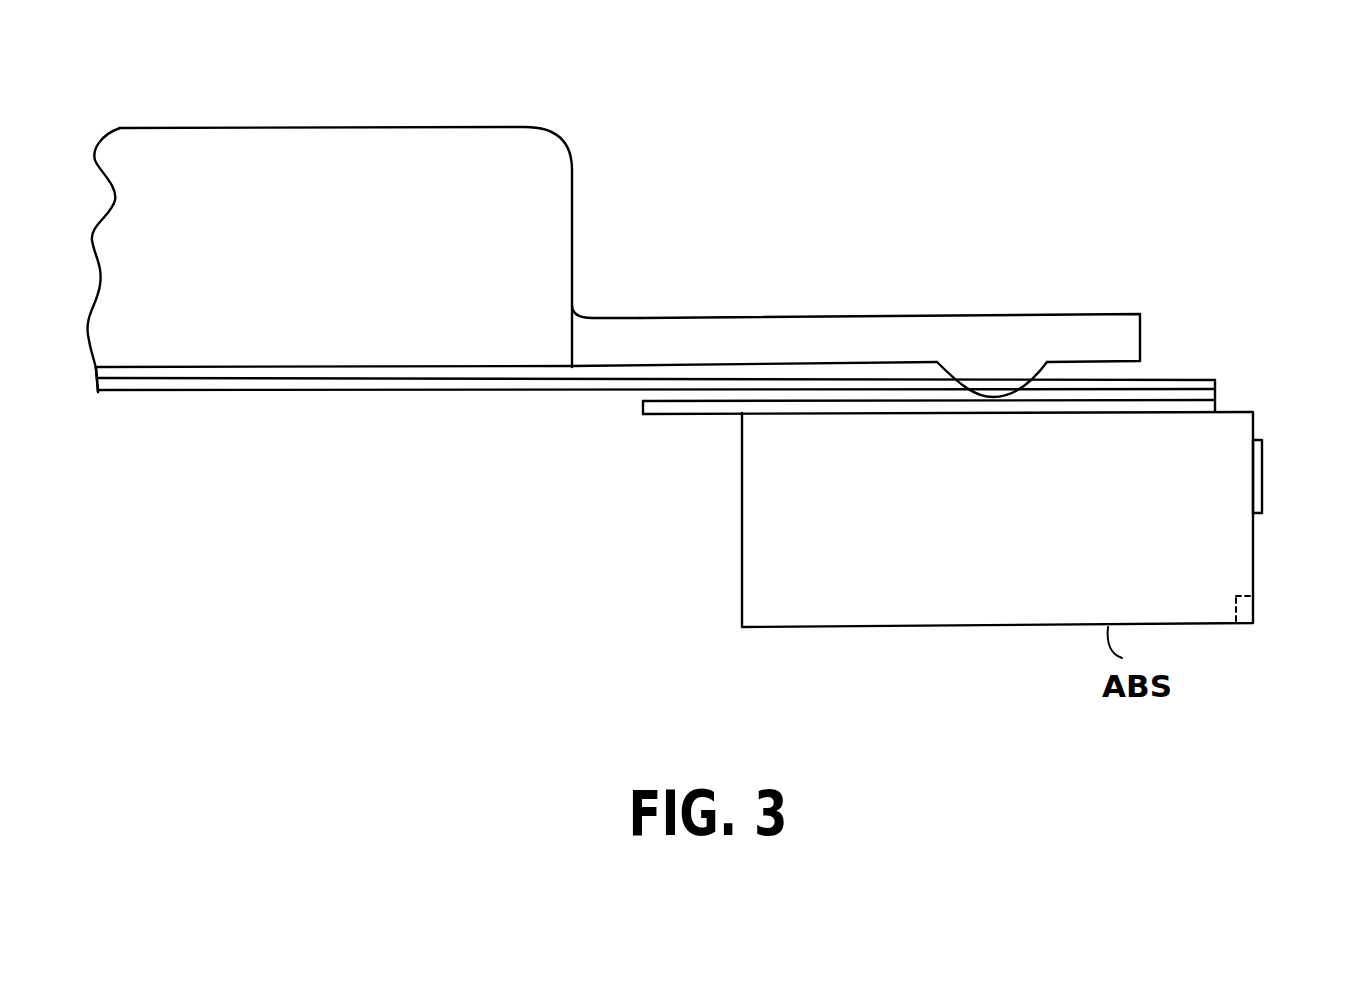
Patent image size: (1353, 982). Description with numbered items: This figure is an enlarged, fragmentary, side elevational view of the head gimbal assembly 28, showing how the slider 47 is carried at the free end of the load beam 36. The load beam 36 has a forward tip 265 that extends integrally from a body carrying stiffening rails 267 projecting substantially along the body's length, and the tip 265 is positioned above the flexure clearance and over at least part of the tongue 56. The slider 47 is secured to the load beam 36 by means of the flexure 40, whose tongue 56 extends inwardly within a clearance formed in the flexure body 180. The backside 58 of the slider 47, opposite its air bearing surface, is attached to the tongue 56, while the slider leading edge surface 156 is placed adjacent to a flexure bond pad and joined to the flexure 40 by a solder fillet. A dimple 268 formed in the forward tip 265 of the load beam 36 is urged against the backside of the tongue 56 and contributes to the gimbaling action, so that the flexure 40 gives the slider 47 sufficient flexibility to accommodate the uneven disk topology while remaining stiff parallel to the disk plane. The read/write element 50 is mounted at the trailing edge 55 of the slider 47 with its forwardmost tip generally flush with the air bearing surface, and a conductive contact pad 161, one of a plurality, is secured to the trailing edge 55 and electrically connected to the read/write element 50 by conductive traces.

The head gimbal assembly 28 is at (801, 45).
The stiffening rail 267 is at (287, 263).
The load beam 36 is at (636, 295).
The forward tip of the load beam 265 is at (846, 357).
The dimple 268 is at (1058, 368).
The flexure 40 is at (422, 410).
The flexure body 180 is at (527, 392).
The tongue 56 is at (670, 416).
The backside of the slider 58 is at (1247, 410).
The slider 47 is at (985, 552).
The conductive contact pad 161 is at (1262, 490).
The trailing edge of the slider 55 is at (1275, 428).
The read/write element 50 is at (1255, 613).
The slider leading edge surface 156 is at (720, 605).